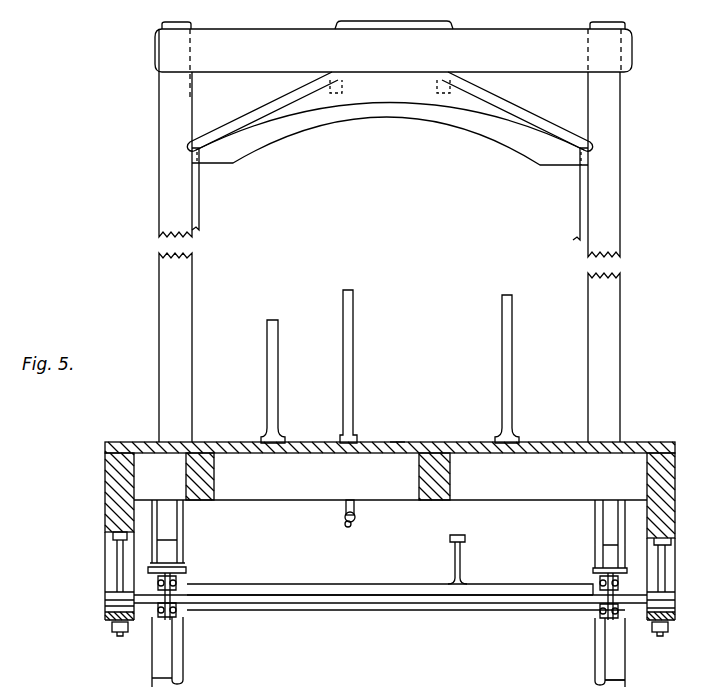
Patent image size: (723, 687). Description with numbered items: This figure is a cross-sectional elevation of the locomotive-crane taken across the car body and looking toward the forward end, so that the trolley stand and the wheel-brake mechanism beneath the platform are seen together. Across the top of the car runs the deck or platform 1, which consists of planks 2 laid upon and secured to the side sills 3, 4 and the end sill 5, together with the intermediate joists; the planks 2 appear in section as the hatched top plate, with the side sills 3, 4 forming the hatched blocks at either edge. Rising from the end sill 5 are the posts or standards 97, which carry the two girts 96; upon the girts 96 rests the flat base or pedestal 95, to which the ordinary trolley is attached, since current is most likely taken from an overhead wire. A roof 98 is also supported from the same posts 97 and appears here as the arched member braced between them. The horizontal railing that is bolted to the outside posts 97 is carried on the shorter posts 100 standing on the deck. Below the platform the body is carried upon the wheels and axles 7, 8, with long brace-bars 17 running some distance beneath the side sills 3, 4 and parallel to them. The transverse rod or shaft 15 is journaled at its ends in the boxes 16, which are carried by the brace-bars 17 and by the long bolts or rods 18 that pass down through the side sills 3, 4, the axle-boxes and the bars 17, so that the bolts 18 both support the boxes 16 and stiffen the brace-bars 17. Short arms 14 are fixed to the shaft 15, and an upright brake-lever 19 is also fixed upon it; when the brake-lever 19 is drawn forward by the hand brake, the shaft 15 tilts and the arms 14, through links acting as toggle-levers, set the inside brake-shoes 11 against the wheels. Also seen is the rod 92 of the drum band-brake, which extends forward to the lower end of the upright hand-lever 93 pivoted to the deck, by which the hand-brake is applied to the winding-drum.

The deck or platform 1 is at (390, 437).
The planks 2 is at (398, 442).
The side sill 3 is at (105, 477).
The side sill 4 is at (675, 502).
The end sill 5 is at (390, 476).
The wheels and axles 7 is at (626, 686).
The wheels and axles 8 is at (343, 584).
The inside brake-shoes 11 is at (180, 662).
The projections or short arms 14 is at (157, 612).
The rod or shaft 15 is at (276, 604).
The boxes 16 is at (676, 598).
The brace-bars 17 is at (108, 624).
The long bolts or rods 18 is at (118, 570).
The brake-lever 19 is at (462, 557).
The rod 92 is at (355, 523).
The upright hand-lever 93 is at (351, 385).
The flat base or pedestal 95 is at (409, 23).
The girts 96 is at (393, 61).
The posts or standards 97 is at (160, 115).
The roof 98 is at (276, 102).
The posts 100 is at (266, 391).